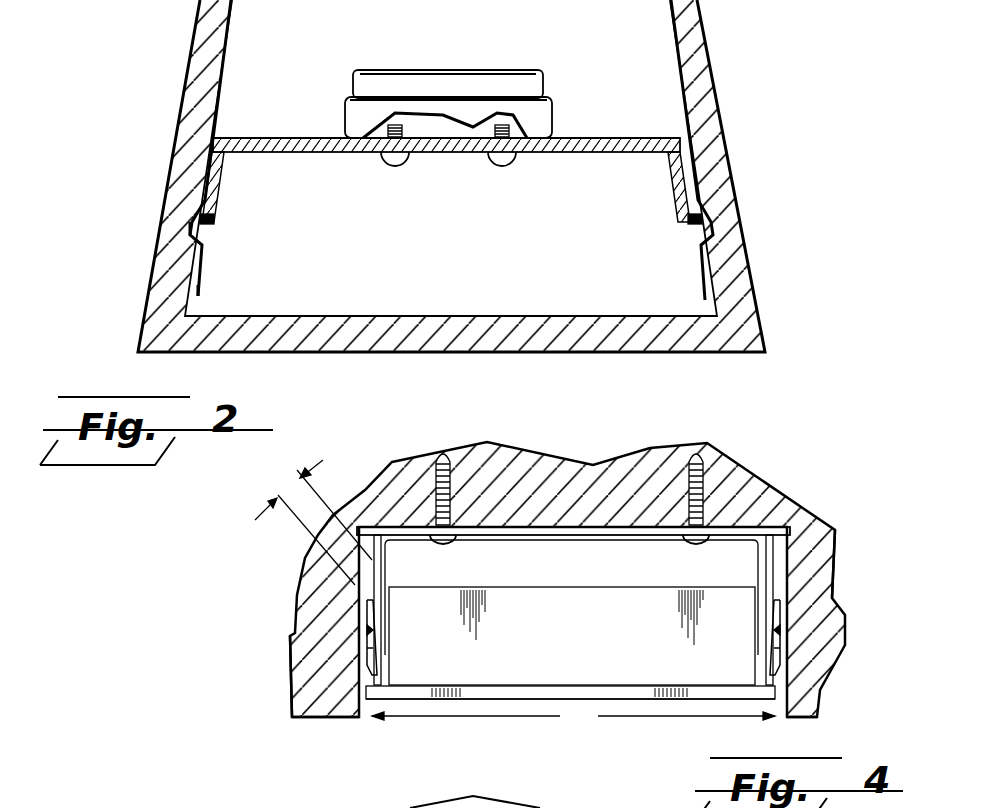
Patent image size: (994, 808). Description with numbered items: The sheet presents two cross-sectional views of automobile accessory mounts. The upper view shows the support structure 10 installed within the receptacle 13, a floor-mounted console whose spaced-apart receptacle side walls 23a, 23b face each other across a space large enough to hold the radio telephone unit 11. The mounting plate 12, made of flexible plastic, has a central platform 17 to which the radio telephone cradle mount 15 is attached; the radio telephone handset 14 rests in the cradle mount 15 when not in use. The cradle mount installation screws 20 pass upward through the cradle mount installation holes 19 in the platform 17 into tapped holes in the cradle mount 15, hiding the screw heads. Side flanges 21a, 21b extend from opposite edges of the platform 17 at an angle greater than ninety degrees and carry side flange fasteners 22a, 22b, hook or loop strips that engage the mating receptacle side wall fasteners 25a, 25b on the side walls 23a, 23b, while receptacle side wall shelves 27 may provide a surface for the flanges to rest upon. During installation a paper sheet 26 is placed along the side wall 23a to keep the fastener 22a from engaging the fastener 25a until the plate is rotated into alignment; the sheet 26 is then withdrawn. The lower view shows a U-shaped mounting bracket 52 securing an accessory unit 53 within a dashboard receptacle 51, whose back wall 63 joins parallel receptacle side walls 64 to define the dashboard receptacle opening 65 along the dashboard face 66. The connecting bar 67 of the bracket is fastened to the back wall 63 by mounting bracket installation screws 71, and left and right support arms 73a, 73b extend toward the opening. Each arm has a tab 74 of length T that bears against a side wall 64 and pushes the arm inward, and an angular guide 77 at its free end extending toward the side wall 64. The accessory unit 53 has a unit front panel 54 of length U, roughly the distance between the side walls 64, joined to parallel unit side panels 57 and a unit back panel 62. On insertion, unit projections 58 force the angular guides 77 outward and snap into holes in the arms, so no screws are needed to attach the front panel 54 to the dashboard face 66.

In FIG. 2, the support structure 10 is at (305, 112).
In FIG. 2, the radio telephone unit 11 is at (570, 105).
In FIG. 2, the mounting plate 12 is at (647, 132).
In FIG. 2, the receptacle 13 is at (460, 305).
In FIG. 2, the radio telephone handset 14 is at (462, 85).
In FIG. 2, the radio telephone cradle mount 15 is at (416, 107).
In FIG. 2, the platform 17 is at (585, 145).
In FIG. 2, the cradle mount installation holes 19 is at (385, 125).
In FIG. 2, the cradle mount installation screws 20 is at (397, 160).
In FIG. 2, the side flange 21a is at (227, 173).
In FIG. 2, the side flange 21b is at (672, 190).
In FIG. 2, the side flange fastener 22a is at (190, 212).
In FIG. 2, the side flange fastener 22b is at (690, 207).
In FIG. 2, the receptacle side wall 23a is at (190, 118).
In FIG. 2, the receptacle side wall 23b is at (718, 110).
In FIG. 2, the receptacle side wall fastener 25a is at (200, 188).
In FIG. 2, the receptacle side wall fastener 25b is at (727, 180).
In FIG. 2, the paper sheet 26 is at (198, 292).
In FIG. 2, the receptacle side wall shelf 27 is at (187, 258).
In FIG. 4, the dashboard receptacle 51 is at (537, 571).
In FIG. 4, the mounting bracket 52 is at (750, 480).
In FIG. 4, the accessory unit 53 is at (680, 650).
In FIG. 4, the unit front panel 54 is at (540, 699).
In FIG. 4, the unit side panels 57 is at (355, 650).
In FIG. 4, the unit projections 58 is at (335, 630).
In FIG. 4, the unit back panel 62 is at (621, 588).
In FIG. 4, the dashboard receptacle back wall 63 is at (575, 528).
In FIG. 4, the dashboard receptacle side walls 64 is at (778, 568).
In FIG. 4, the dashboard receptacle opening 65 is at (462, 703).
In FIG. 4, the dashboard face 66 is at (340, 718).
In FIG. 4, the connecting bar 67 is at (610, 527).
In FIG. 4, the mounting bracket installation screws 71 is at (703, 478).
In FIG. 4, the left support arm 73a is at (367, 620).
In FIG. 4, the right support arm 73b is at (781, 650).
In FIG. 4, the tab 74 is at (338, 600).
In FIG. 4, the angular guide 77 is at (345, 688).
In FIG. 4, the tab length T is at (313, 522).
In FIG. 4, the unit front panel length U is at (573, 714).